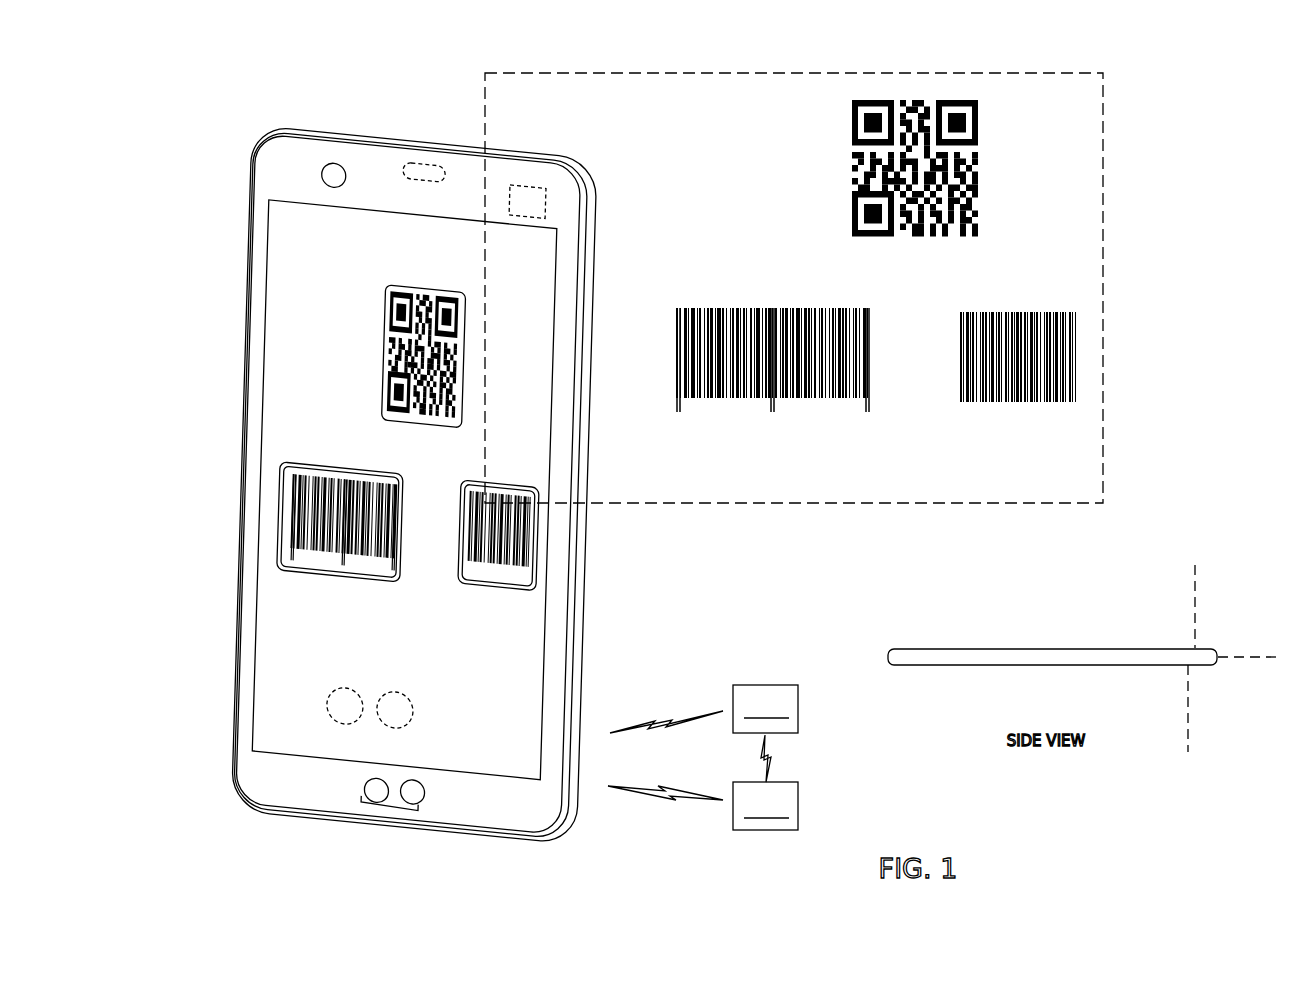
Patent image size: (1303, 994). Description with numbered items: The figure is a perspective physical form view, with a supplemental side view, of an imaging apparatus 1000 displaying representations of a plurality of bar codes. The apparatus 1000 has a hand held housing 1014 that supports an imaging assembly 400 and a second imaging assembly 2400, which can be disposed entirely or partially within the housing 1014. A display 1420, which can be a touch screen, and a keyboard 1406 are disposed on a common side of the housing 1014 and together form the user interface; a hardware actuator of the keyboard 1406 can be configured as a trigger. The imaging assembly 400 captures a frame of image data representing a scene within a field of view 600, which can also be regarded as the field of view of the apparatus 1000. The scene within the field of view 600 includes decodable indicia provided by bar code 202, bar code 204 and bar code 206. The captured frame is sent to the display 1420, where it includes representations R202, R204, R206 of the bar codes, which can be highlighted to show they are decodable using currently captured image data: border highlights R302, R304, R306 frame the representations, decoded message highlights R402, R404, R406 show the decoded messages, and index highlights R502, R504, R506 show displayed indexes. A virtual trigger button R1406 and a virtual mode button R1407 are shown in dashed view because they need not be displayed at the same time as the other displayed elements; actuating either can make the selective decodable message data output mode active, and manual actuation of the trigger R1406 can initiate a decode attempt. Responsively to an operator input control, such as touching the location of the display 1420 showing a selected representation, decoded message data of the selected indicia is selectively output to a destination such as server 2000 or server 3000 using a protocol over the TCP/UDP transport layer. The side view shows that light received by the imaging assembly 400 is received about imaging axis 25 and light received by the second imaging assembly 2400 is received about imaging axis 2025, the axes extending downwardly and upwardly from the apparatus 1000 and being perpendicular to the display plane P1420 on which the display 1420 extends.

The imaging apparatus 1000 is at (594, 661).
The hand held housing 1014 is at (500, 791).
The display 1420 is at (273, 656).
The second imaging assembly 2400 is at (387, 164).
The imaging assembly 400 is at (547, 202).
The keyboard 1406 is at (390, 809).
The virtual trigger button R1406 is at (416, 711).
The virtual mode button R1407 is at (327, 708).
The representation of bar code R202 is at (312, 490).
The border highlight R302 is at (282, 509).
The decoded message highlight R402 is at (284, 586).
The index highlight R502 is at (345, 450).
The representation of bar code R204 is at (438, 302).
The border highlight R304 is at (468, 325).
The decoded message highlight R404 is at (466, 434).
The index highlight R504 is at (424, 265).
The representation of bar code R206 is at (526, 494).
The border highlight R306 is at (538, 534).
The decoded message highlight R406 is at (538, 606).
The index highlight R506 is at (509, 463).
The field of view 600 is at (1105, 185).
The bar code 202 is at (746, 296).
The bar code 204 is at (834, 130).
The bar code 206 is at (1007, 297).
The server 3000 is at (704, 709).
The server 2000 is at (703, 782).
The imaging axis 2025 is at (1194, 584).
The imaging axis 25 is at (1188, 728).
The display plane P1420 is at (1242, 657).